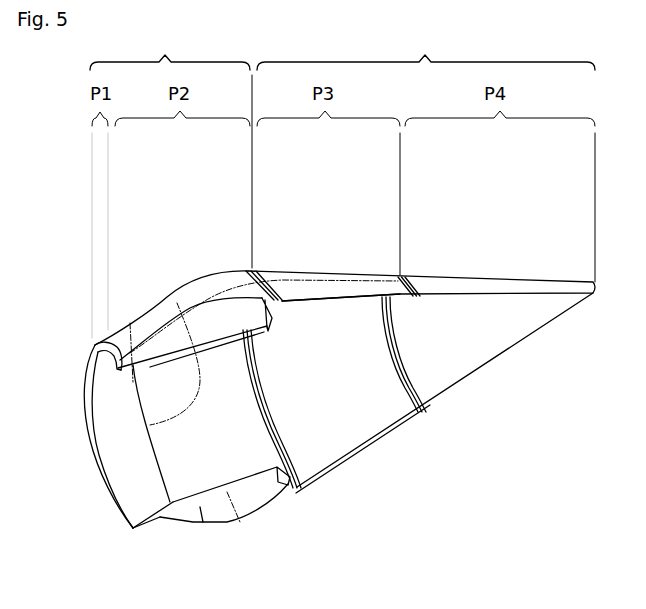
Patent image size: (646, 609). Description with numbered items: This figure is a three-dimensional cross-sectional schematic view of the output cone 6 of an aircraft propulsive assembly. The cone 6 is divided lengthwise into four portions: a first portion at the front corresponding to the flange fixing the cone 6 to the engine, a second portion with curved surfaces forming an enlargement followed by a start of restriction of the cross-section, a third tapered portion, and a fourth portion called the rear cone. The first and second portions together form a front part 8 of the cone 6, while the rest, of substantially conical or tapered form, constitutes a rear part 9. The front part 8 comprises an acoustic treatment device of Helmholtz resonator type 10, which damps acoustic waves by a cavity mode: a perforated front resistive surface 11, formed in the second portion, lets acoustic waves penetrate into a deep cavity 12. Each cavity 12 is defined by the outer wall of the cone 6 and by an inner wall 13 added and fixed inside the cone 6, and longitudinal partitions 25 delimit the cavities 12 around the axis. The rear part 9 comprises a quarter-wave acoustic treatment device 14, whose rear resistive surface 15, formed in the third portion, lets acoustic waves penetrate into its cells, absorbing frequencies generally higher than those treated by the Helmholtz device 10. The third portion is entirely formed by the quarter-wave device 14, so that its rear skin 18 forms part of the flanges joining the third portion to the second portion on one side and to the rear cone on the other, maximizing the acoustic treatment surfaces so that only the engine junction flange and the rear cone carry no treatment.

The cone 6 is at (438, 226).
The front part 8 is at (170, 51).
The rear part 9 is at (426, 51).
The acoustic treatment device of Helmholtz resonator type 10 is at (219, 325).
The front resistive surface 11 is at (197, 298).
The cavity 12 is at (172, 303).
The inner wall 13 is at (150, 425).
The quarter-wave acoustic treatment device 14 is at (420, 413).
The rear resistive surface 15 is at (297, 270).
The rear skin 18 is at (357, 300).
The longitudinal partitions 25 is at (157, 334).